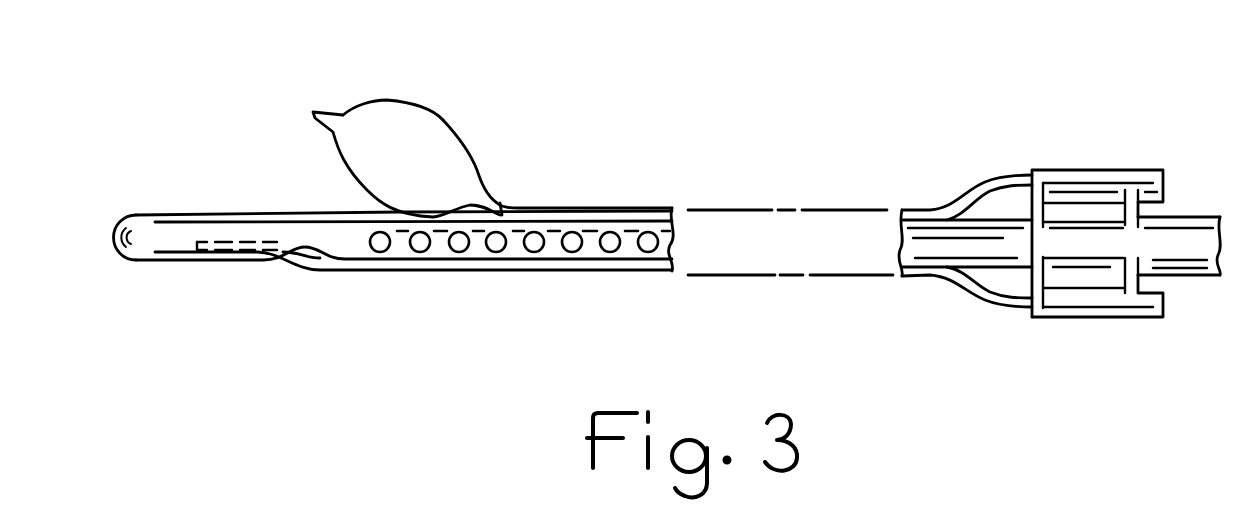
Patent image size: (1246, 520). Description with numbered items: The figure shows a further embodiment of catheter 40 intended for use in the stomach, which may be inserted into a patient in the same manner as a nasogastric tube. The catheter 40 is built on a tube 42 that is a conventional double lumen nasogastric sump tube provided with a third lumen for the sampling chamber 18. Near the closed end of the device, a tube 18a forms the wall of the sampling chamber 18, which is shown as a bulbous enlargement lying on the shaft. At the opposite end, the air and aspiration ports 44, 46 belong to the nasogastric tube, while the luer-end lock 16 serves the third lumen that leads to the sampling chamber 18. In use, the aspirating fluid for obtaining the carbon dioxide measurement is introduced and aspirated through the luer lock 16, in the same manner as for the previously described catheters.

The luer-lock 16 is at (1117, 169).
The sampling chamber 18 is at (400, 92).
The tube 18a is at (450, 123).
The catheter 40 is at (836, 331).
The tube 42 is at (720, 205).
The air port 44 is at (1055, 322).
The aspiration port 46 is at (1207, 283).